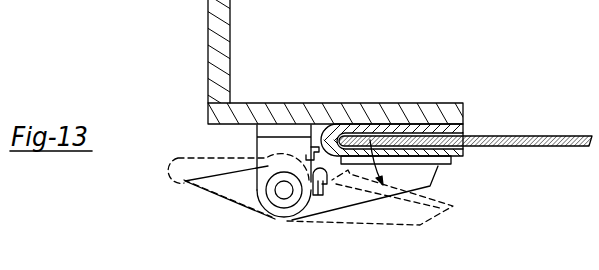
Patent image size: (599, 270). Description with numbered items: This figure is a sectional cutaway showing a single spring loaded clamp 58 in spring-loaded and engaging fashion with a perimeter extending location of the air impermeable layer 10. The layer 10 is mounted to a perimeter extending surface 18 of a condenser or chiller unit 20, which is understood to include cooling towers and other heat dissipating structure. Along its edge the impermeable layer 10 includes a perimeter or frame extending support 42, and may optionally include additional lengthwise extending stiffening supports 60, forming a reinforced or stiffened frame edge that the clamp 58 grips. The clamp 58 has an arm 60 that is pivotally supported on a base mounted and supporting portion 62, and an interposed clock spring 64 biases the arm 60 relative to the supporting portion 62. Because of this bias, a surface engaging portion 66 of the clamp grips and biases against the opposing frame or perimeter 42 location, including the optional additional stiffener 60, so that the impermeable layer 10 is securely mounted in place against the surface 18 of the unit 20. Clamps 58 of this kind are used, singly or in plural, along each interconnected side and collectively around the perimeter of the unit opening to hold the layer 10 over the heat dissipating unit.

The impermeable layer 10 is at (517, 136).
The perimeter extending surface 18 is at (214, 125).
The condenser or chiller unit 20 is at (208, 44).
The perimeter/frame extending support 42 is at (455, 157).
The spring loaded clamp 58 is at (289, 228).
The arm 60 is at (186, 180).
The base mounted and supporting portion 62 is at (257, 152).
The clock spring 64 is at (302, 147).
The surface engaging portion 66 is at (427, 165).